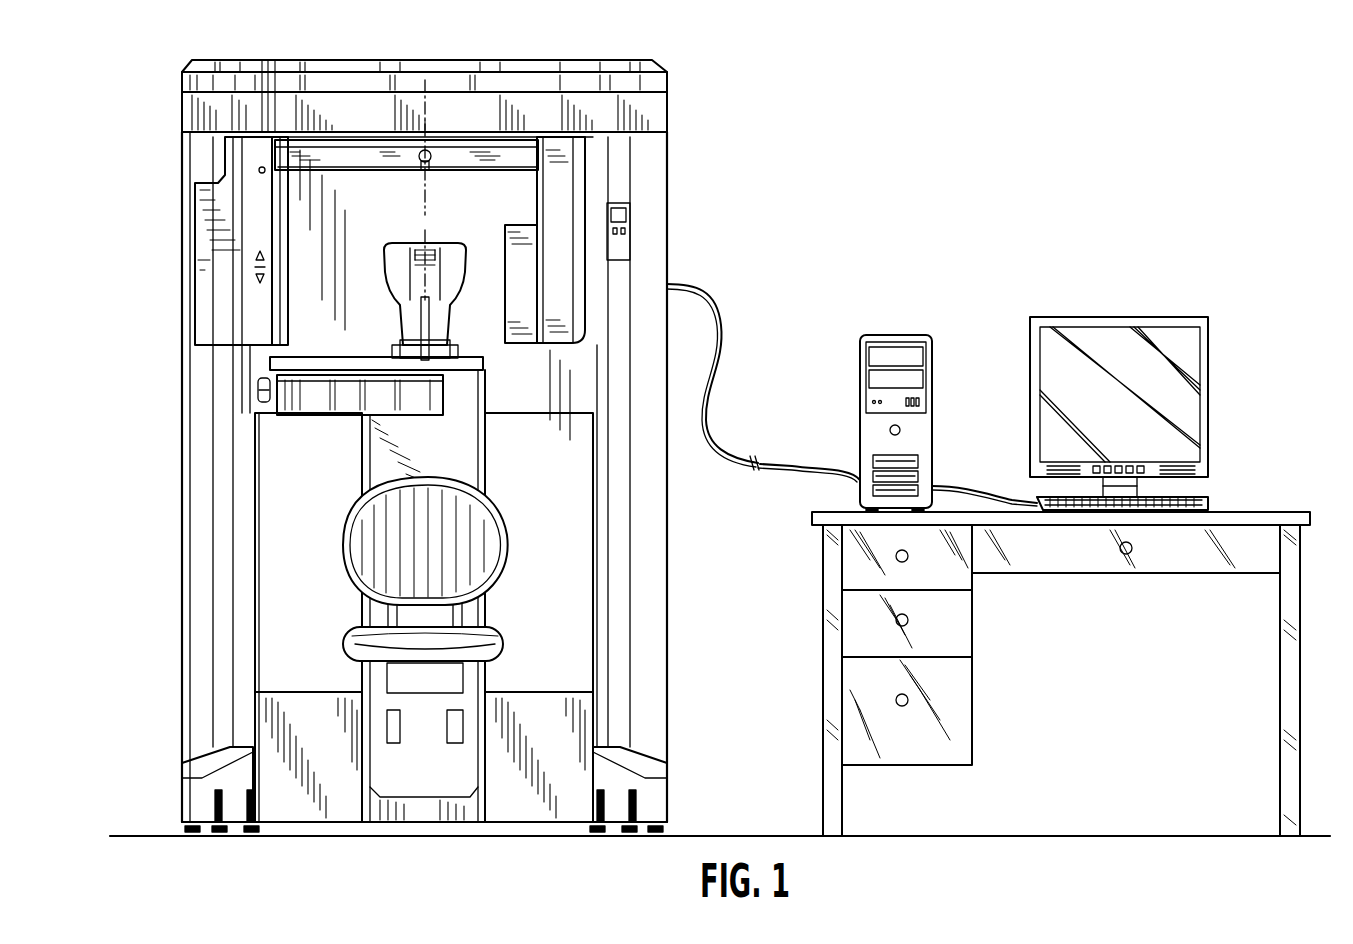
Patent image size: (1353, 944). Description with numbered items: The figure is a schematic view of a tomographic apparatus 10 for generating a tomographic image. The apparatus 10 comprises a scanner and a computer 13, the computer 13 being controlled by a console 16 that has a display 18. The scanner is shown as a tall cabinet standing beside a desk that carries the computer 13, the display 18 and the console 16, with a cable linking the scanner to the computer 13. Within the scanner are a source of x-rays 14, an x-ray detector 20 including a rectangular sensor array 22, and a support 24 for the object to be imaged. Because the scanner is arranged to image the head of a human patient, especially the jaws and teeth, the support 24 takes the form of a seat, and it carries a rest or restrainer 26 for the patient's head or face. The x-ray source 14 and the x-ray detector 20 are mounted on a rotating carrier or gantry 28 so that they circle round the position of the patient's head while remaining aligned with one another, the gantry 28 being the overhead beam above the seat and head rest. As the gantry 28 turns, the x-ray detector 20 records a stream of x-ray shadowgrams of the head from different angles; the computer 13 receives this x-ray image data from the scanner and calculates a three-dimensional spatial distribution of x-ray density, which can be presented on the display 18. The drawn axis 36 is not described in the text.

The tomographic apparatus 10 is at (1017, 80).
The computer 13 is at (893, 334).
The source of x-rays 14 is at (199, 345).
The console 16 is at (1210, 500).
The display 18 is at (1112, 318).
The x-ray detector 20 is at (524, 352).
The rectangular sensor array 22 is at (505, 249).
The support 24 is at (502, 630).
The rest or restrainer 26 is at (388, 270).
The rotating carrier or gantry 28 is at (352, 172).
The rotation axis 36 is at (425, 97).